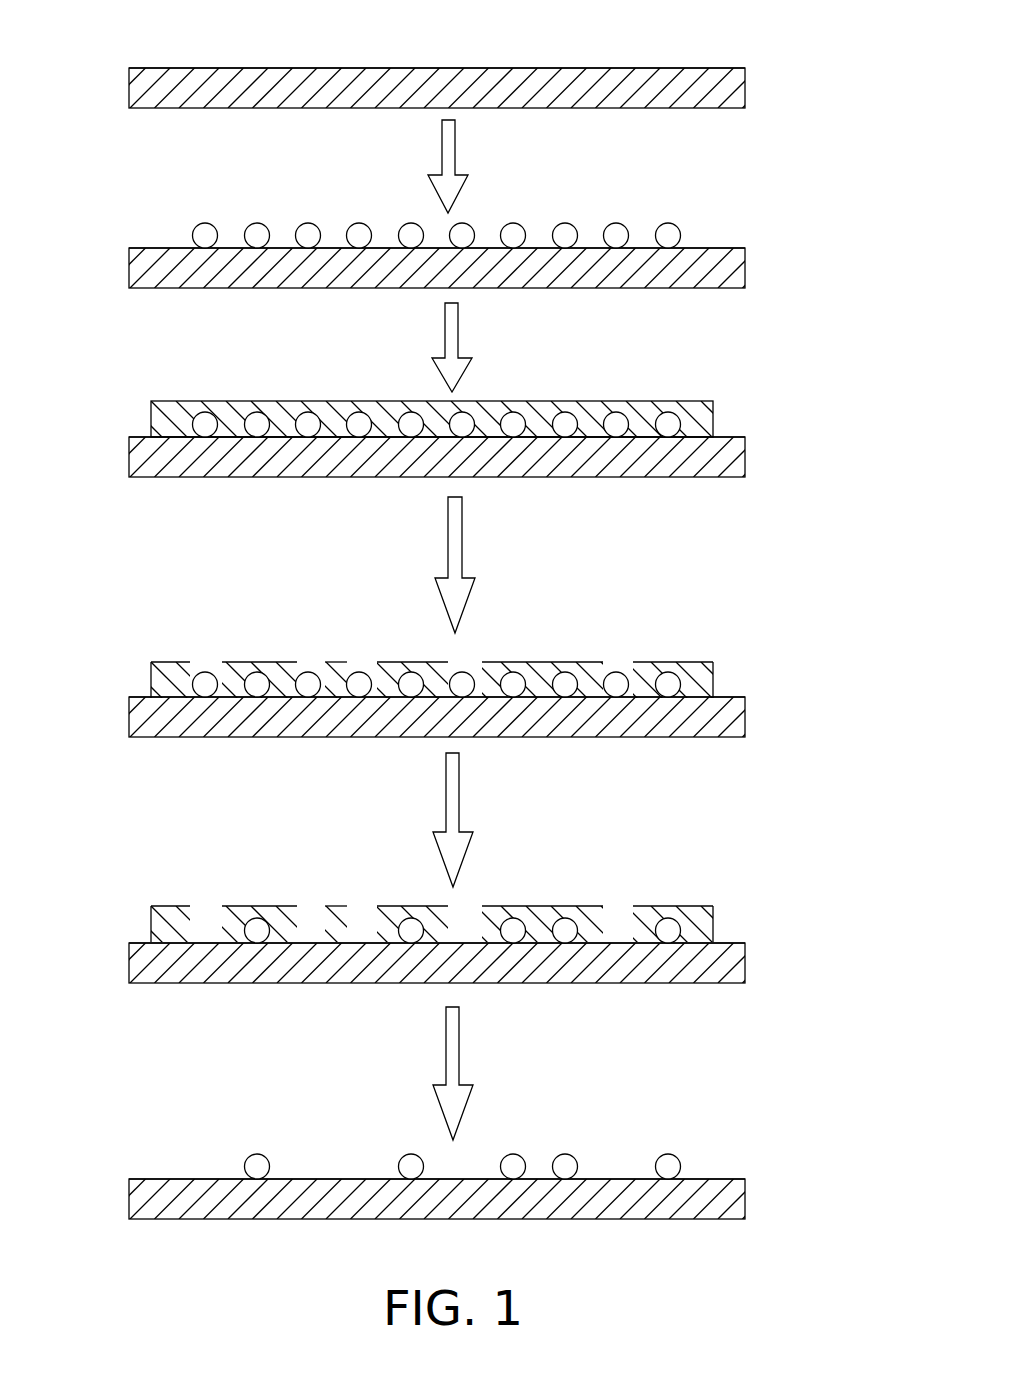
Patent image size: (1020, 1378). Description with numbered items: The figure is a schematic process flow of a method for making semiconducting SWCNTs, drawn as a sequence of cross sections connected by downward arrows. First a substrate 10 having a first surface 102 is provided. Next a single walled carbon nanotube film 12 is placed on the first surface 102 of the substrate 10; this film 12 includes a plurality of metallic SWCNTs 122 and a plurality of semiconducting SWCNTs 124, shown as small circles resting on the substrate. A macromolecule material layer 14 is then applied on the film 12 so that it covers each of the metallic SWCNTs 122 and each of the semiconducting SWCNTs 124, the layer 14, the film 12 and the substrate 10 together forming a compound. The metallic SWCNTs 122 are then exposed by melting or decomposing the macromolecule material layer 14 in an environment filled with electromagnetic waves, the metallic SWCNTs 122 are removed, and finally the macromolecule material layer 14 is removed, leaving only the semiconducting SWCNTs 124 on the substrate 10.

The substrate 10 is at (730, 85).
The first surface 102 is at (698, 67).
The single walled carbon nanotube film 12 is at (670, 231).
The macromolecule material layer 14 is at (702, 418).
The metallic SWCNTs 122 is at (618, 668).
The semiconducting SWCNTs 124 is at (562, 672).